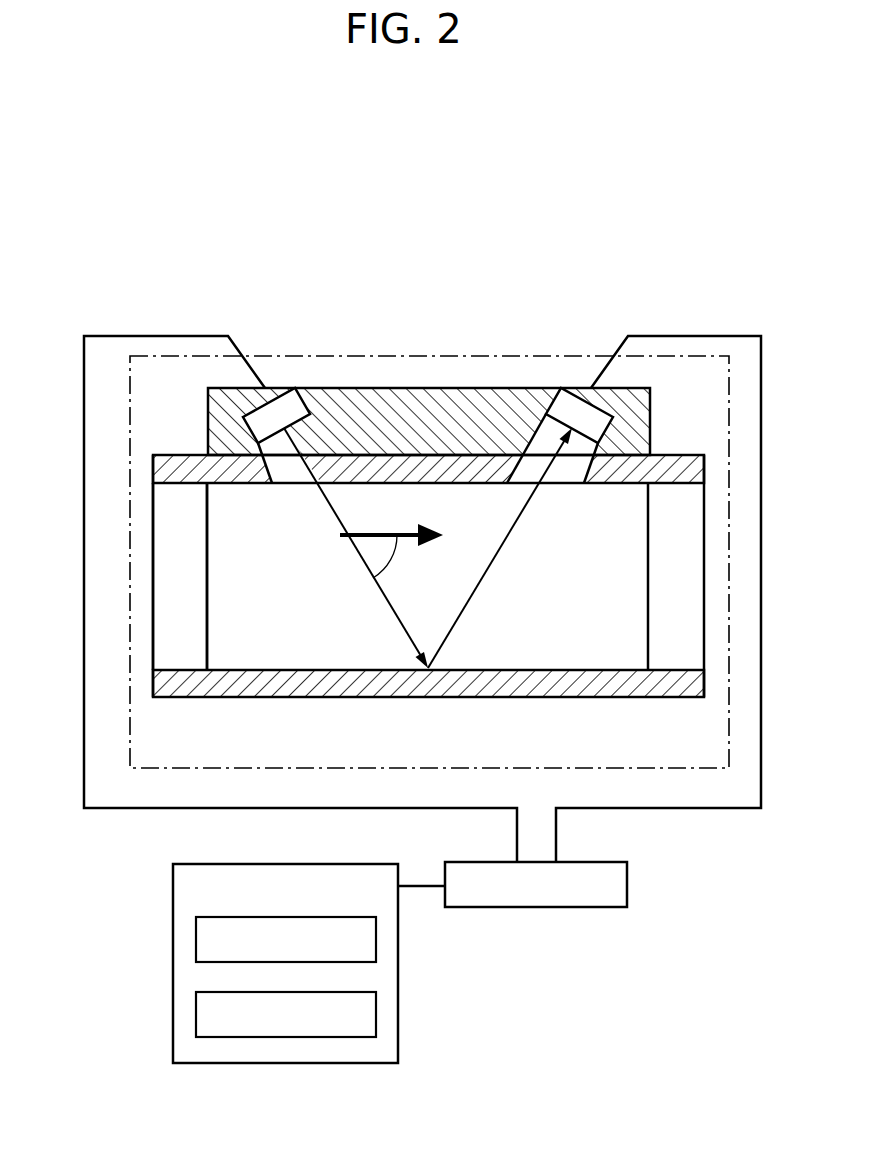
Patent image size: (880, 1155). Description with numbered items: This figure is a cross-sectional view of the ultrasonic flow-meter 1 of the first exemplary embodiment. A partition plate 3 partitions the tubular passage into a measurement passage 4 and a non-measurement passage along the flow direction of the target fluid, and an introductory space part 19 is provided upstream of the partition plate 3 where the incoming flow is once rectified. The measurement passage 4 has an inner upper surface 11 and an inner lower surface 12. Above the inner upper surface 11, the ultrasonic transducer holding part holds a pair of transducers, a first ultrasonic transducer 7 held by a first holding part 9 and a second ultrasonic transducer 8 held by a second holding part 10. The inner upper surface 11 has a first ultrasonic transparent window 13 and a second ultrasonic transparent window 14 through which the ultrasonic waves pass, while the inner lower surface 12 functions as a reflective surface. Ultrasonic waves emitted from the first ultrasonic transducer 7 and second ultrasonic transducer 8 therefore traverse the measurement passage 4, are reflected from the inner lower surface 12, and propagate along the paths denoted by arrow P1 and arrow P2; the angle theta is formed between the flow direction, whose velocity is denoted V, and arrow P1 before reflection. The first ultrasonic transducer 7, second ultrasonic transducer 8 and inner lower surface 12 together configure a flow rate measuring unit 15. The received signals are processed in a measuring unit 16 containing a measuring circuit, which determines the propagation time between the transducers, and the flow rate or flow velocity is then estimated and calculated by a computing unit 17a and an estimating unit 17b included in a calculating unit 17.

The ultrasonic flow-meter 1 is at (742, 303).
The partition plate 3 is at (207, 519).
The measurement passage 4 is at (627, 547).
The first ultrasonic transducer 7 is at (280, 392).
The second ultrasonic transducer 8 is at (575, 396).
The first holding part 9 is at (238, 395).
The second holding part 10 is at (620, 397).
The inner upper surface 11 is at (206, 490).
The inner lower surface 12 is at (207, 667).
The first ultrasonic transparent window 13 is at (293, 465).
The second ultrasonic transparent window 14 is at (567, 468).
The flow rate measuring unit 15 is at (440, 357).
The measuring unit 16 is at (627, 886).
The calculating unit 17 is at (172, 887).
The computing unit 17a is at (377, 940).
The estimating unit 17b is at (377, 1015).
The introductory space part 19 is at (178, 572).
The arrow P1 is at (383, 597).
The arrow P2 is at (483, 583).